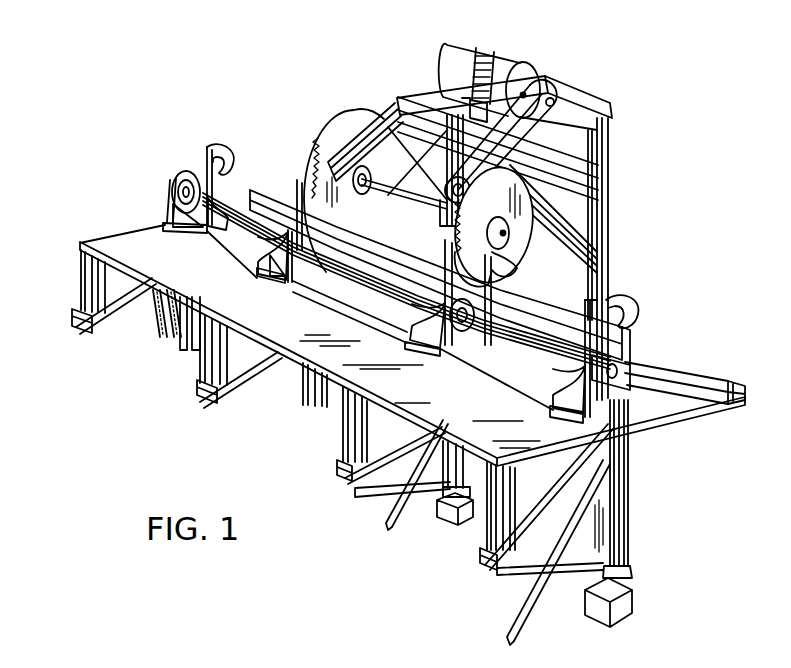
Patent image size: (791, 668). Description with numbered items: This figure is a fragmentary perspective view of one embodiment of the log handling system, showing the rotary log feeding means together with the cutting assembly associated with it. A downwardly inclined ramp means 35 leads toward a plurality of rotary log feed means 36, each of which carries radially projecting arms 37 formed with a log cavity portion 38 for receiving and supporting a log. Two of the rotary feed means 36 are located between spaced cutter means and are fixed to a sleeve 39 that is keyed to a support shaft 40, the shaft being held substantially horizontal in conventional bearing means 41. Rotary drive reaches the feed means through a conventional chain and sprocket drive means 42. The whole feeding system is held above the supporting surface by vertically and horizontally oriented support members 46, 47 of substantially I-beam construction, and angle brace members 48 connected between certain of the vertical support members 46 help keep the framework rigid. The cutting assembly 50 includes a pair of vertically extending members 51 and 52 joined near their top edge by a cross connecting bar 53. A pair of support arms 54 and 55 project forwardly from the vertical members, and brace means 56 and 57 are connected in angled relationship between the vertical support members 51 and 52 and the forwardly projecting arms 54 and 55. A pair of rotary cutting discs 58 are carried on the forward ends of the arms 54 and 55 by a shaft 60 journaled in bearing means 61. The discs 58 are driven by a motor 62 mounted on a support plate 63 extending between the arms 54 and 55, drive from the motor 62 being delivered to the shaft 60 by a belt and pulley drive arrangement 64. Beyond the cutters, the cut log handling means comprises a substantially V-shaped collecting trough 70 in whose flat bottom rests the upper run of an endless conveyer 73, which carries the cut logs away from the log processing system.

The ramp means 35 is at (452, 407).
The rotary log feed means 36 is at (624, 290).
The radially projecting arms 37 is at (259, 258).
The log cavity portion 38 is at (218, 168).
The sleeve 39 is at (258, 223).
The support shaft 40 is at (290, 280).
The bearing means 41 is at (630, 367).
The chain and sprocket drive means 42 is at (153, 317).
The vertically oriented support members 46 is at (78, 272).
The horizontally oriented support members 47 is at (93, 337).
The angle brace members 48 is at (394, 508).
The cutting assembly 50 is at (488, 239).
The vertically extending member 51 is at (446, 143).
The vertically extending member 52 is at (609, 195).
The cross connecting bar 53 is at (581, 103).
The support arm 54 is at (394, 106).
The support arm 55 is at (550, 175).
The brace means 56 is at (439, 223).
The brace means 57 is at (583, 259).
The rotary cutting discs 58 is at (353, 116).
The shaft 60 is at (413, 205).
The bearing means 61 is at (361, 192).
The motor 62 is at (485, 57).
The support plate 63 is at (420, 88).
The belt and pulley drive arrangement 64 is at (548, 94).
The collecting trough 70 is at (648, 432).
The endless conveyer 73 is at (712, 410).